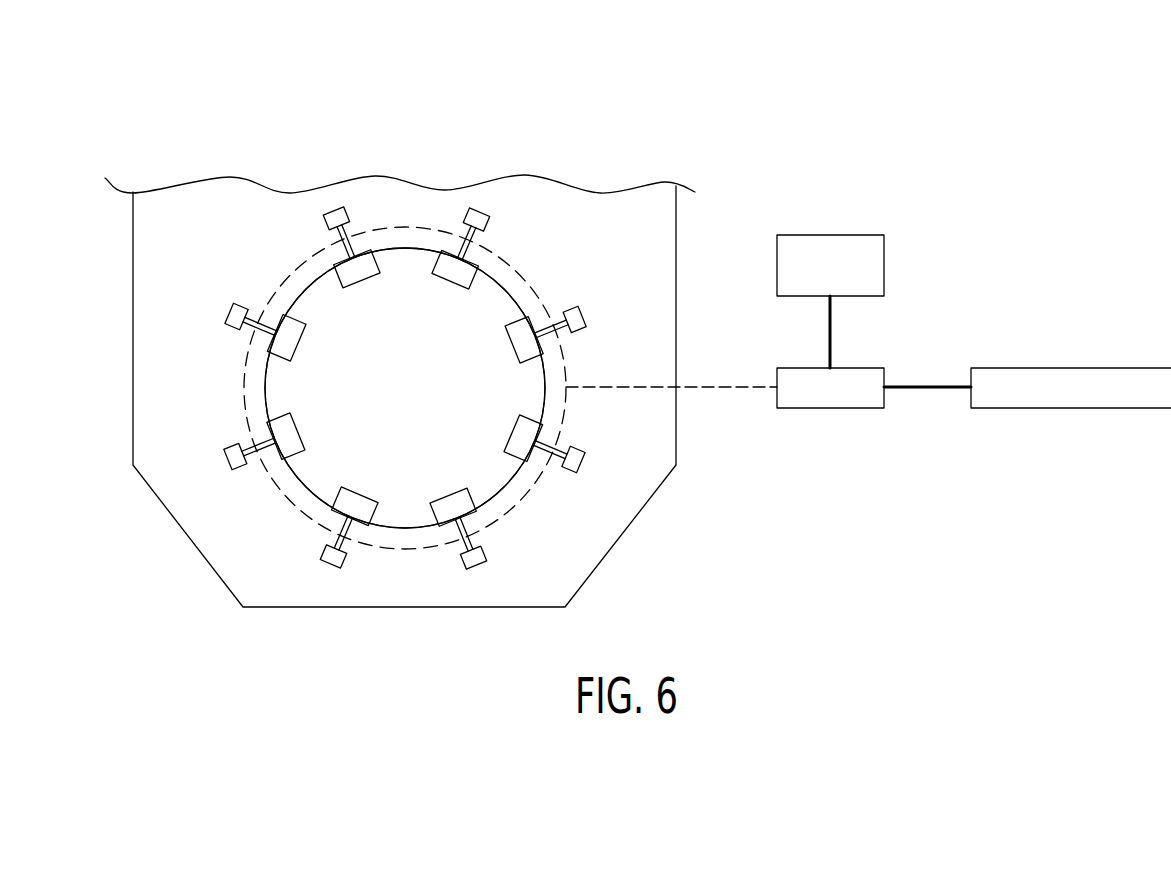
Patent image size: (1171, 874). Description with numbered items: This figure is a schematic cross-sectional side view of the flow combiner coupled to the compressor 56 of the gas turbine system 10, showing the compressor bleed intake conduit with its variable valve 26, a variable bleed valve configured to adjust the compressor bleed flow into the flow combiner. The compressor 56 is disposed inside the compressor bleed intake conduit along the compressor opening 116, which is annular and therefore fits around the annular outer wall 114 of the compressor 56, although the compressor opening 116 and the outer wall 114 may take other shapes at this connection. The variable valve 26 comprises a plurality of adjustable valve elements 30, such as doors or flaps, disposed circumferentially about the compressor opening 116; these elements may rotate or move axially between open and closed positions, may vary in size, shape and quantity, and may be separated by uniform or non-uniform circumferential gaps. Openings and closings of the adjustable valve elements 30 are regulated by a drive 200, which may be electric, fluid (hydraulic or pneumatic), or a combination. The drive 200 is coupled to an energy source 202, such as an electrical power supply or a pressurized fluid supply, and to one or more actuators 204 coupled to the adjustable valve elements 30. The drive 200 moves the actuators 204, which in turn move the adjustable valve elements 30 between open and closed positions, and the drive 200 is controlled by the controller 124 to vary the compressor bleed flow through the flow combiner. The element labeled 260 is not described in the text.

The gas turbine system 10 is at (718, 82).
The variable valve 26 is at (547, 403).
The adjustable valve elements 30 is at (520, 443).
The compressor 56 is at (415, 366).
The outer wall 114 is at (292, 475).
The compressor opening 116 is at (313, 488).
The controller 124 is at (1075, 408).
The drive 200 is at (832, 408).
The energy source 202 is at (885, 268).
The actuators 204 is at (338, 206).
The sensor 260 is at (220, 457).